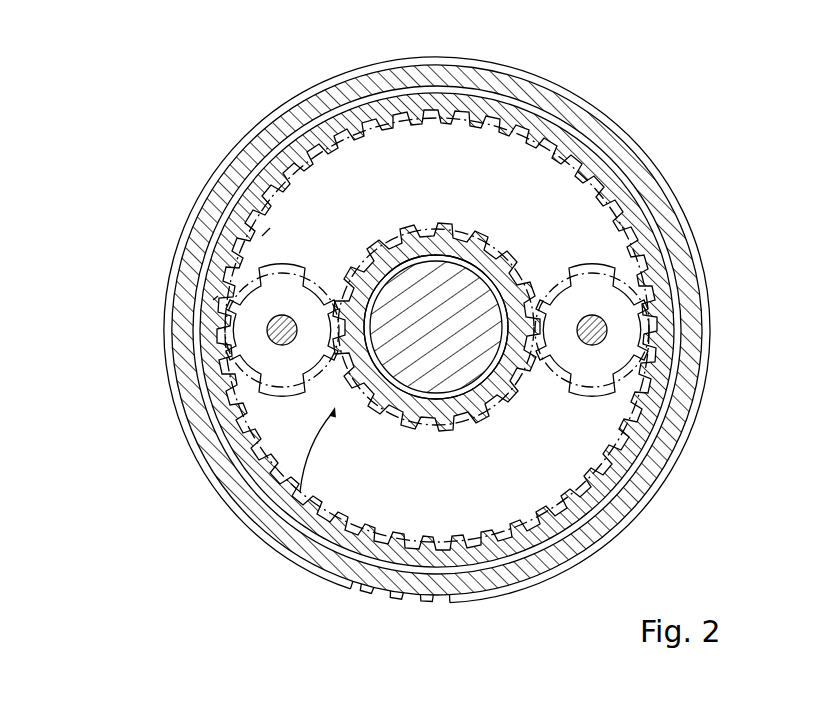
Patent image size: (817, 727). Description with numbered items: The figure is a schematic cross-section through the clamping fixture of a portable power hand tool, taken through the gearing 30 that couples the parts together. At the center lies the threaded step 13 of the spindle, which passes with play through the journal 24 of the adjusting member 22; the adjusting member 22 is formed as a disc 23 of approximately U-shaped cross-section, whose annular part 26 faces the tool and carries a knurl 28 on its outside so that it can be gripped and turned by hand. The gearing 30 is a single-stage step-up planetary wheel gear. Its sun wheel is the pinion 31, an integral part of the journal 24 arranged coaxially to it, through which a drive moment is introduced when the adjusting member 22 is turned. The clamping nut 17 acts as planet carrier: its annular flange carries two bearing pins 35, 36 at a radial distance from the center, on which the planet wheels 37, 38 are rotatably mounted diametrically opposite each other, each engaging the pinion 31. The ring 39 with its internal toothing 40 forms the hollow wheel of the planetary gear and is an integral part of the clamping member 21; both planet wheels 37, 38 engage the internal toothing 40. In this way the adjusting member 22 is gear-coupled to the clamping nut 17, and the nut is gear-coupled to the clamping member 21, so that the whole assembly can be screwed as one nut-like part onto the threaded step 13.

The threaded step 13 is at (475, 288).
The clamping nut 17 is at (552, 273).
The clamping member 21 is at (258, 178).
The adjusting member 22 is at (492, 427).
The disc 23 is at (452, 178).
The journal 24 is at (478, 240).
The annular part 26 is at (683, 270).
The knurl 28 is at (362, 594).
The gearing 30 is at (300, 492).
The pinion 31 is at (400, 233).
The bearing pin 35 is at (272, 330).
The bearing pin 36 is at (608, 330).
The planet wheel 37 is at (270, 397).
The planet wheel 38 is at (632, 421).
The ring 39 is at (213, 300).
The internal toothing 40 is at (262, 236).